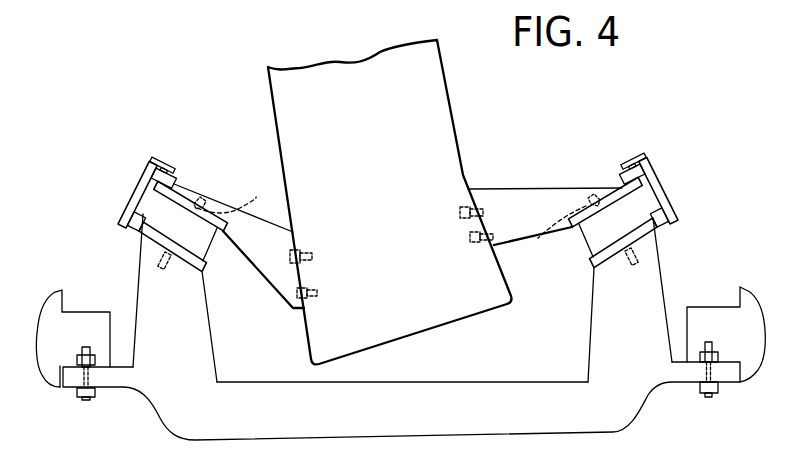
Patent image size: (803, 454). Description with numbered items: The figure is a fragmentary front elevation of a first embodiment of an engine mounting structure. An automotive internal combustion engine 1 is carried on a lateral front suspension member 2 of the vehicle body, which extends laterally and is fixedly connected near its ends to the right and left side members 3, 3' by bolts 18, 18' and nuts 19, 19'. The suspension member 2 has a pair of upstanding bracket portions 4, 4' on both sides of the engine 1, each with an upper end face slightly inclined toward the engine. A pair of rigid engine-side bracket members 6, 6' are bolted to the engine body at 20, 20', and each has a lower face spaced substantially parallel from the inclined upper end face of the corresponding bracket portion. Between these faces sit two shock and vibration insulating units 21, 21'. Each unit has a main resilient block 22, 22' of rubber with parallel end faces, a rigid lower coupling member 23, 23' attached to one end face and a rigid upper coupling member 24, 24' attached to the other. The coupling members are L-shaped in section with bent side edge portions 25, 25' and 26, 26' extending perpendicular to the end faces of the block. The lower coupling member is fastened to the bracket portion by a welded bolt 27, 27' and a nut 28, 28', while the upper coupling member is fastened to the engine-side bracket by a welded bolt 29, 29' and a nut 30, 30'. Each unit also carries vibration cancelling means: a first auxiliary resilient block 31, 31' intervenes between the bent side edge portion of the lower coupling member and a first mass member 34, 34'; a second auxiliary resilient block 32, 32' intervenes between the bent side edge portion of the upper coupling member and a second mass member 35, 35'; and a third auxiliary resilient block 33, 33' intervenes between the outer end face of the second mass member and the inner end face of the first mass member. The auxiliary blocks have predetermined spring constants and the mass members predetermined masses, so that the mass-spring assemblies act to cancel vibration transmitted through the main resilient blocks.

The internal combustion engine 1 is at (449, 84).
The front suspension member 2 is at (414, 412).
The side member 3 is at (73, 338).
The side member 3' is at (726, 334).
The bracket portion 4 is at (186, 298).
The bracket portion 4' is at (611, 300).
The engine-side bracket member 6 is at (239, 246).
The engine-side bracket member 6' is at (545, 202).
The bolt 18 is at (92, 412).
The bolt 18' is at (706, 407).
The nut 19 is at (106, 353).
The nut 19' is at (709, 348).
The bolt 20 is at (301, 280).
The bolt 20' is at (479, 200).
The shock and vibration insulating unit 21 is at (128, 184).
The shock and vibration insulating unit 21' is at (675, 190).
The main resilient block 22 is at (185, 250).
The main resilient block 22' is at (610, 250).
The lower coupling member 23 is at (128, 266).
The lower coupling member 23' is at (611, 281).
The upper coupling member 24 is at (252, 241).
The upper coupling member 24' is at (560, 246).
The side edge portion 25 is at (193, 242).
The side edge portion 25' is at (603, 236).
The side edge portion 26 is at (190, 193).
The side edge portion 26' is at (605, 193).
The bolt 27 is at (157, 283).
The bolt 27' is at (632, 287).
The nut 28 is at (189, 283).
The nut 28' is at (675, 270).
The bolt 29 is at (222, 189).
The bolt 29' is at (568, 203).
The nut 30 is at (238, 199).
The nut 30' is at (549, 236).
The first auxiliary resilient block 31 is at (115, 219).
The first auxiliary resilient block 31' is at (689, 221).
The second auxiliary resilient block 32 is at (178, 165).
The second auxiliary resilient block 32' is at (616, 157).
The third auxiliary resilient block 33 is at (148, 151).
The third auxiliary resilient block 33' is at (658, 152).
The first mass member 34 is at (110, 188).
The first mass member 34' is at (693, 198).
The second mass member 35 is at (165, 148).
The second mass member 35' is at (639, 144).